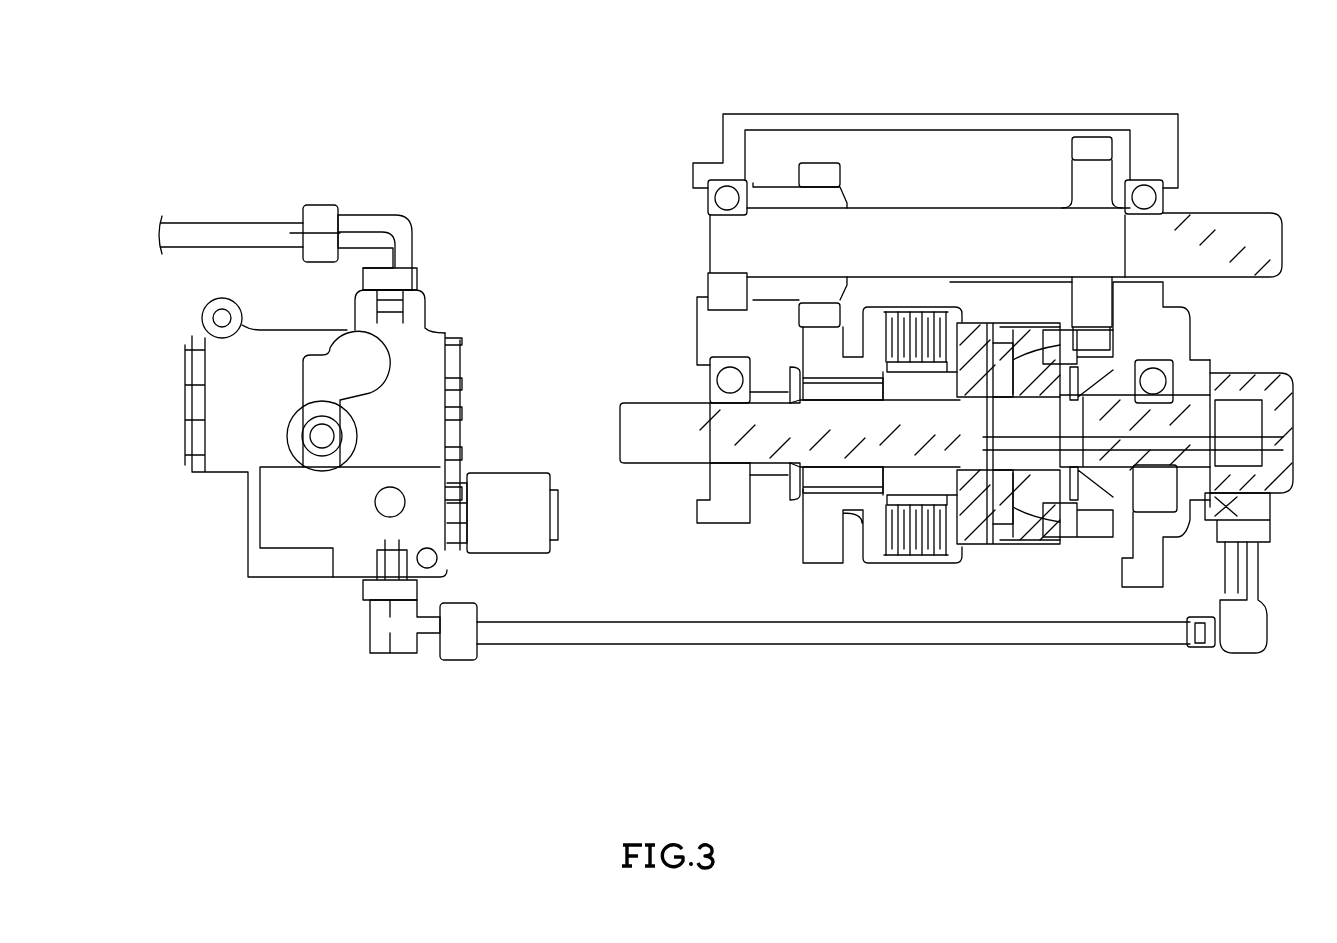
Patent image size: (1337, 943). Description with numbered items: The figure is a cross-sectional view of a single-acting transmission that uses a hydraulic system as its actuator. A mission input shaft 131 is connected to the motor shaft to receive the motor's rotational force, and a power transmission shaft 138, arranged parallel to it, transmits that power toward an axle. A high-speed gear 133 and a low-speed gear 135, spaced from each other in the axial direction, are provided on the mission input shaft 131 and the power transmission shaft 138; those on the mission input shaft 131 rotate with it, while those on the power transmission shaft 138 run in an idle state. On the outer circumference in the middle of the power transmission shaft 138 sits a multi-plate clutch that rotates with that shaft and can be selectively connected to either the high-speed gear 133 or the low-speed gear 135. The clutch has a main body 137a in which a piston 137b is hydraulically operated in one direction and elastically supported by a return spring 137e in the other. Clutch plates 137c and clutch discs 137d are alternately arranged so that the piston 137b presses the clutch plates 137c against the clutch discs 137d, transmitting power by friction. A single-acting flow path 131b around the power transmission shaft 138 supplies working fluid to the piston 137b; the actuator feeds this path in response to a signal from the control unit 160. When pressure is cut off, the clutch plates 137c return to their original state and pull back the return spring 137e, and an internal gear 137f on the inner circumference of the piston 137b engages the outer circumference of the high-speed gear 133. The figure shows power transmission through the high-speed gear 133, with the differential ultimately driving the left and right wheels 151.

The mission input shaft 131 is at (1228, 238).
The single-acting flow path 131b is at (1197, 447).
The high-speed gear 133 is at (1090, 332).
The low-speed gear 135 is at (821, 340).
The main body 137a is at (1025, 543).
The piston 137b is at (1005, 545).
The clutch plates 137c is at (943, 530).
The clutch discs 137d is at (912, 540).
The return spring 137e is at (855, 530).
The internal gear 137f is at (1083, 545).
The power transmission shaft 138 is at (655, 423).
The left and right wheels 151 is at (1203, 728).
The control unit 160 is at (158, 314).